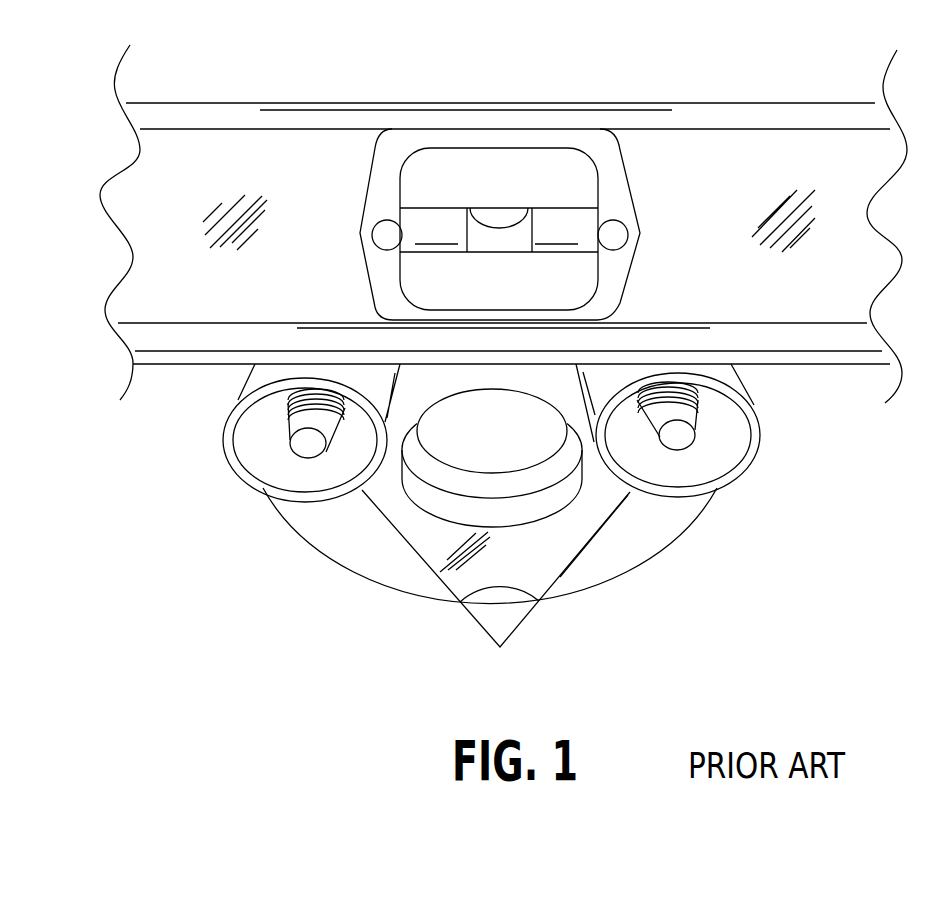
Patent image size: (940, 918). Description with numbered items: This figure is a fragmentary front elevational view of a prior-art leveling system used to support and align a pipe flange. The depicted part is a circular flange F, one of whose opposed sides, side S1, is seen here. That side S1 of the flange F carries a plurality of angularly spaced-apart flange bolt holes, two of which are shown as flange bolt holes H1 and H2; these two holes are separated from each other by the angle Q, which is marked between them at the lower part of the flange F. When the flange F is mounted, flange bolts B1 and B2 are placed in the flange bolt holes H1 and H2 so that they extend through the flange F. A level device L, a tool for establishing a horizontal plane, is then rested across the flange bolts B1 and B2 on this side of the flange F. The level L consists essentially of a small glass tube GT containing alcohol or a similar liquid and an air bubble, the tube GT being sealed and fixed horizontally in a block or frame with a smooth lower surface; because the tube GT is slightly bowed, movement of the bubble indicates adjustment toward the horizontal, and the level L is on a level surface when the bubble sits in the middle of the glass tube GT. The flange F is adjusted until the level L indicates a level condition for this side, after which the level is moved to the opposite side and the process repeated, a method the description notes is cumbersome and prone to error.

The level device L is at (683, 170).
The glass tube GT is at (433, 225).
The circular flange F is at (363, 547).
The flange bolt hole H1 is at (298, 498).
The flange bolt hole H2 is at (680, 493).
The flange bolt B1 is at (308, 443).
The flange bolt B2 is at (680, 435).
The side of flange S1 is at (650, 547).
The angle θ Q is at (517, 581).